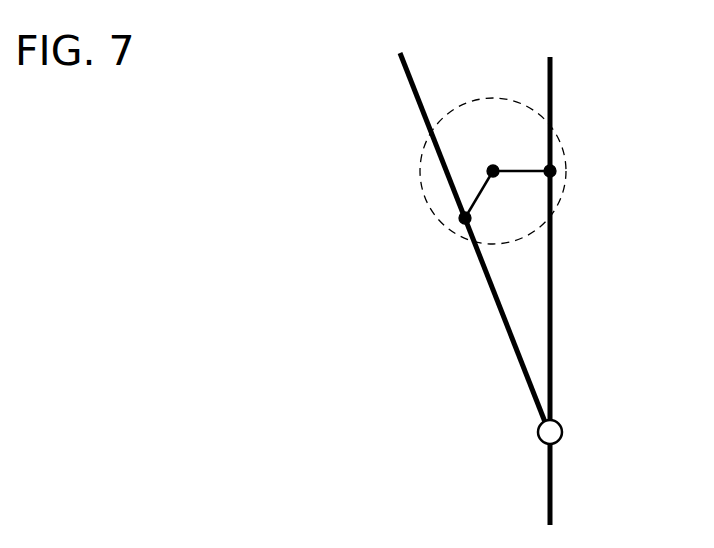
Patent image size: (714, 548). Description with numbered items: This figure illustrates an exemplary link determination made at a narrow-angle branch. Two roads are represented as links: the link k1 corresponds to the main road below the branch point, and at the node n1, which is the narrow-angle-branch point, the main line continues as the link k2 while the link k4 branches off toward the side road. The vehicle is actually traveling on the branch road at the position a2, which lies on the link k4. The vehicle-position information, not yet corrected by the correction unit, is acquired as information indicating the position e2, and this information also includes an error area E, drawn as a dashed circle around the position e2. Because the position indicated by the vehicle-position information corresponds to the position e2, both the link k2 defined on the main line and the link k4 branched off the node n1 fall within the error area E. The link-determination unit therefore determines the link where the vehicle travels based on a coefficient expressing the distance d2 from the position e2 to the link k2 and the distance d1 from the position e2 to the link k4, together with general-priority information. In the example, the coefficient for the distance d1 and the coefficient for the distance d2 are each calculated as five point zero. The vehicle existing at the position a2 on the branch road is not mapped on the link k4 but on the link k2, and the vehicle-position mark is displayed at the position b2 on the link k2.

The link k4 is at (410, 81).
The link k2 is at (552, 108).
The link k1 is at (553, 497).
The error area E is at (420, 190).
The distance d2 is at (533, 170).
The distance d1 is at (481, 192).
The position e2 is at (491, 168).
The position b2 is at (556, 171).
The position a2 is at (460, 222).
The node n1 is at (562, 430).